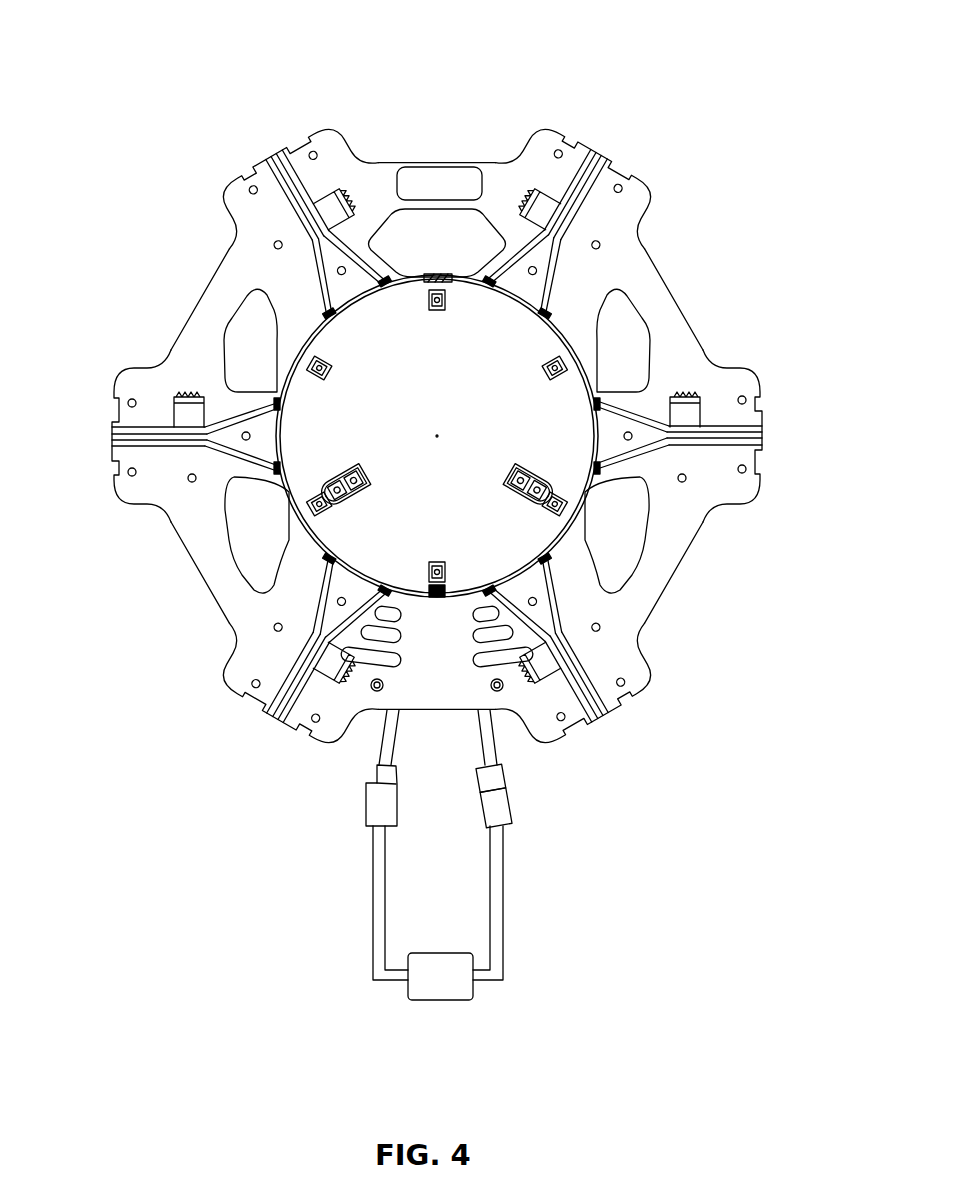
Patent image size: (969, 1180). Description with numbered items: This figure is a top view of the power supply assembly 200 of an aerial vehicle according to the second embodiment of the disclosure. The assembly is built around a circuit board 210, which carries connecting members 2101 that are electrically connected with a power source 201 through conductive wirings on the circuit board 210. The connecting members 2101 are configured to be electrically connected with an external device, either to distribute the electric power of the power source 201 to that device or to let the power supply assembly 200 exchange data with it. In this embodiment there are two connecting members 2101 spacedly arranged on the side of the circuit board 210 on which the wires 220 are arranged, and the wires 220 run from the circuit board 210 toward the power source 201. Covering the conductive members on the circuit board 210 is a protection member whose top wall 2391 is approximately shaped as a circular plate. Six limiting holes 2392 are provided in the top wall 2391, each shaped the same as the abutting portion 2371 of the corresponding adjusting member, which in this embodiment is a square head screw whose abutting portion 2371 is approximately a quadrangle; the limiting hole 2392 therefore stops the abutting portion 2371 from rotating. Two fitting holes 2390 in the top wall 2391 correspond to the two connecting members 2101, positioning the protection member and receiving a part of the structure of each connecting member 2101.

The power supply assembly 200 is at (296, 48).
The power source 201 is at (443, 987).
The circuit board 210 is at (636, 612).
The wires 220 is at (580, 650).
The connecting member 2101 is at (352, 508).
The abutting portion 2371 is at (583, 511).
The fitting hole 2390 is at (335, 528).
The top wall 2391 is at (510, 325).
The limiting hole 2392 is at (564, 497).